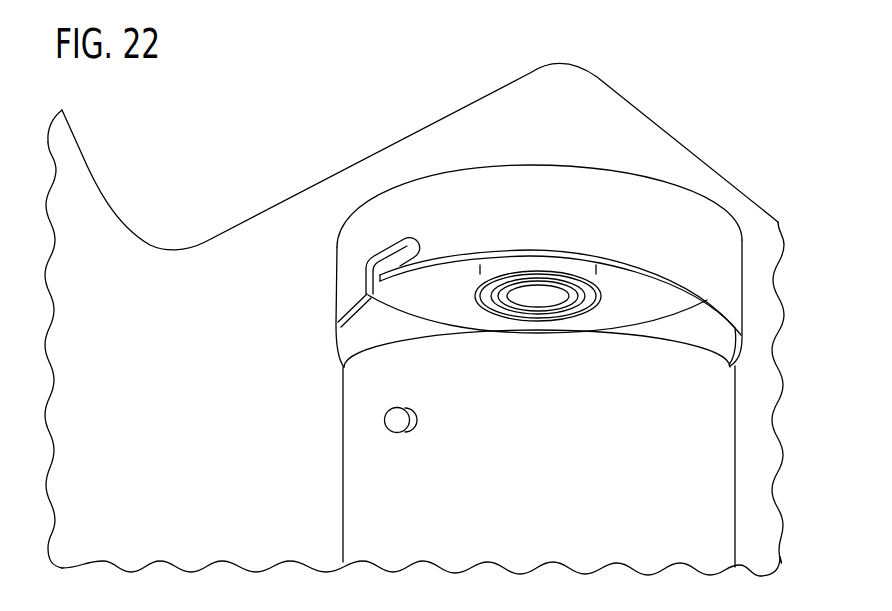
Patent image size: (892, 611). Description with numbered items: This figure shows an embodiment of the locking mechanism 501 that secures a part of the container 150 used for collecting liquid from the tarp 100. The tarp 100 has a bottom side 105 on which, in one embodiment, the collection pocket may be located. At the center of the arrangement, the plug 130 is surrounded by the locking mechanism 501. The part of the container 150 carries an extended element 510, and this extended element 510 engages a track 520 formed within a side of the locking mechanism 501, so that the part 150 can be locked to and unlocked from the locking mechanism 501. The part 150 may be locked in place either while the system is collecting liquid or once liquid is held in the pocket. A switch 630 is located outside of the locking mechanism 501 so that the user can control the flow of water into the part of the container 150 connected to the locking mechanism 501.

The tarp 100 is at (542, 128).
The bottom side 105 is at (204, 330).
The plug 130 is at (572, 303).
The part of the container 150 is at (557, 480).
The locking mechanism 501 is at (581, 188).
The extended element 510 is at (392, 421).
The track 520 is at (401, 260).
The switch 630 is at (602, 294).